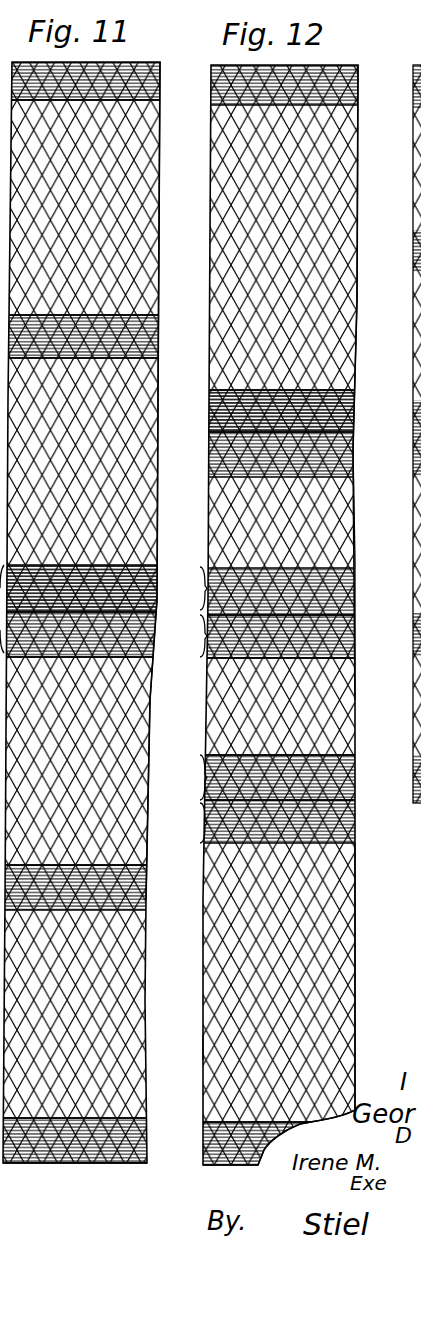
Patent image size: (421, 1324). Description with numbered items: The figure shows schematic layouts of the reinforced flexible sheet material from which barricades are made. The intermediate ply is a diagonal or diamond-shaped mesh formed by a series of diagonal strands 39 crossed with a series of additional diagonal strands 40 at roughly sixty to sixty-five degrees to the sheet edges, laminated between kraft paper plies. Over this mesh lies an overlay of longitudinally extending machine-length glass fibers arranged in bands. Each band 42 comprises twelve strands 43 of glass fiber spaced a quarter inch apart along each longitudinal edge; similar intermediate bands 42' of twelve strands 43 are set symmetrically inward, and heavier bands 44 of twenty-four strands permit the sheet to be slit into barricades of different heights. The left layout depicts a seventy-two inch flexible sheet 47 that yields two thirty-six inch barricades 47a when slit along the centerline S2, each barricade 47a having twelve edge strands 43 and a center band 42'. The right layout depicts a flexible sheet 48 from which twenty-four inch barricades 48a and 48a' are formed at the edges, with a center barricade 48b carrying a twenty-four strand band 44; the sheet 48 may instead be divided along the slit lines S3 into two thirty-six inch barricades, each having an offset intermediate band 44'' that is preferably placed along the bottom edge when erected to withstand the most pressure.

In FIG. 11, the diagonal strands 39 is at (137, 973).
In FIG. 12, the diagonal strands 39 is at (330, 942).
In FIG. 12, the additional diagonal strands 40 is at (420, 717).
In FIG. 11, the band 42 is at (103, 622).
In FIG. 12, the band 42 is at (300, 628).
In FIG. 11, the intermediate band 42' is at (95, 612).
In FIG. 11, the strands of glass fibers 43 is at (160, 80).
In FIG. 12, the strands of glass fibers 43 is at (355, 78).
In FIG. 11, the center band 44 is at (93, 588).
In FIG. 12, the center band 44 is at (293, 616).
In FIG. 12, the intermediate band 44'' is at (292, 613).
In FIG. 11, the flexible sheet 47 is at (60, 1168).
In FIG. 11, the thirty-six inch high barricade 47a is at (158, 395).
In FIG. 12, the flexible sheet 48 is at (355, 1038).
In FIG. 12, the twenty-four inch barricade 48a is at (378, 532).
In FIG. 12, the twenty-four inch barricade 48a' is at (373, 505).
In FIG. 12, the center barricade 48b is at (352, 575).
In FIG. 11, the centerline slit S2 is at (160, 618).
In FIG. 12, the centerline slit S2 is at (352, 617).
In FIG. 12, the seam S3 is at (352, 432).